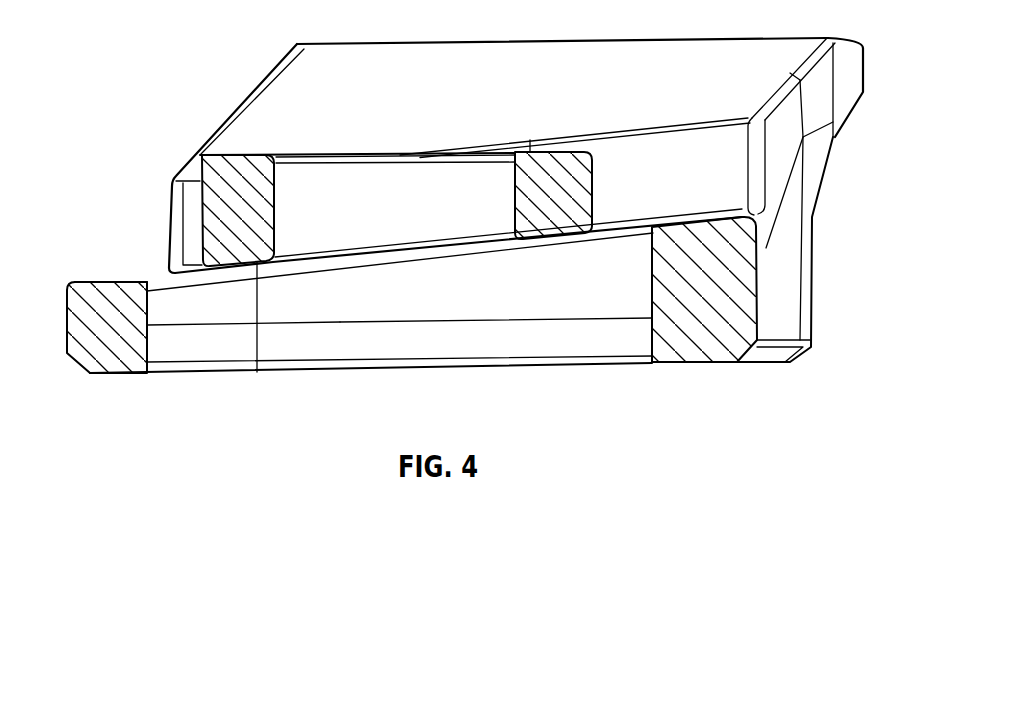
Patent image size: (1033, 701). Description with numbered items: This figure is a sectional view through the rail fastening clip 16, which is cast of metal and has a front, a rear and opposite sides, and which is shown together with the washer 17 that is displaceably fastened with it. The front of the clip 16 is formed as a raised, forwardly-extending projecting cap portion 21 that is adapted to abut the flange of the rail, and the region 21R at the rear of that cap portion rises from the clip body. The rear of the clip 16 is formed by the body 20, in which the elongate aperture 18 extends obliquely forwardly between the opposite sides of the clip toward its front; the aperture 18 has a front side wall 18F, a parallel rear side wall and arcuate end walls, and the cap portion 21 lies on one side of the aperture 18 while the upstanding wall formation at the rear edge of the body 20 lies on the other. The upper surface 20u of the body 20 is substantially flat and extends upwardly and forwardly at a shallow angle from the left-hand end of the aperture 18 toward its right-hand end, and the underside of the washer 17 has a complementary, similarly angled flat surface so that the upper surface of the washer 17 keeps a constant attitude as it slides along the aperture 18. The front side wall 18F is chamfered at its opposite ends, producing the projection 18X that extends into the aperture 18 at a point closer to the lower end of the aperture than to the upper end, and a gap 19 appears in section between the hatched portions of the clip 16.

The clip 16 is at (825, 302).
The washer 17 is at (606, 181).
The elongate aperture 18 is at (423, 321).
The projection 18X is at (270, 327).
The front side wall 18F is at (510, 308).
The groove 19 is at (337, 177).
The body 20 is at (93, 325).
The upper surface 20u is at (82, 280).
The projecting cap portion 21 is at (843, 90).
The rear leg of upper arm 21R is at (190, 238).